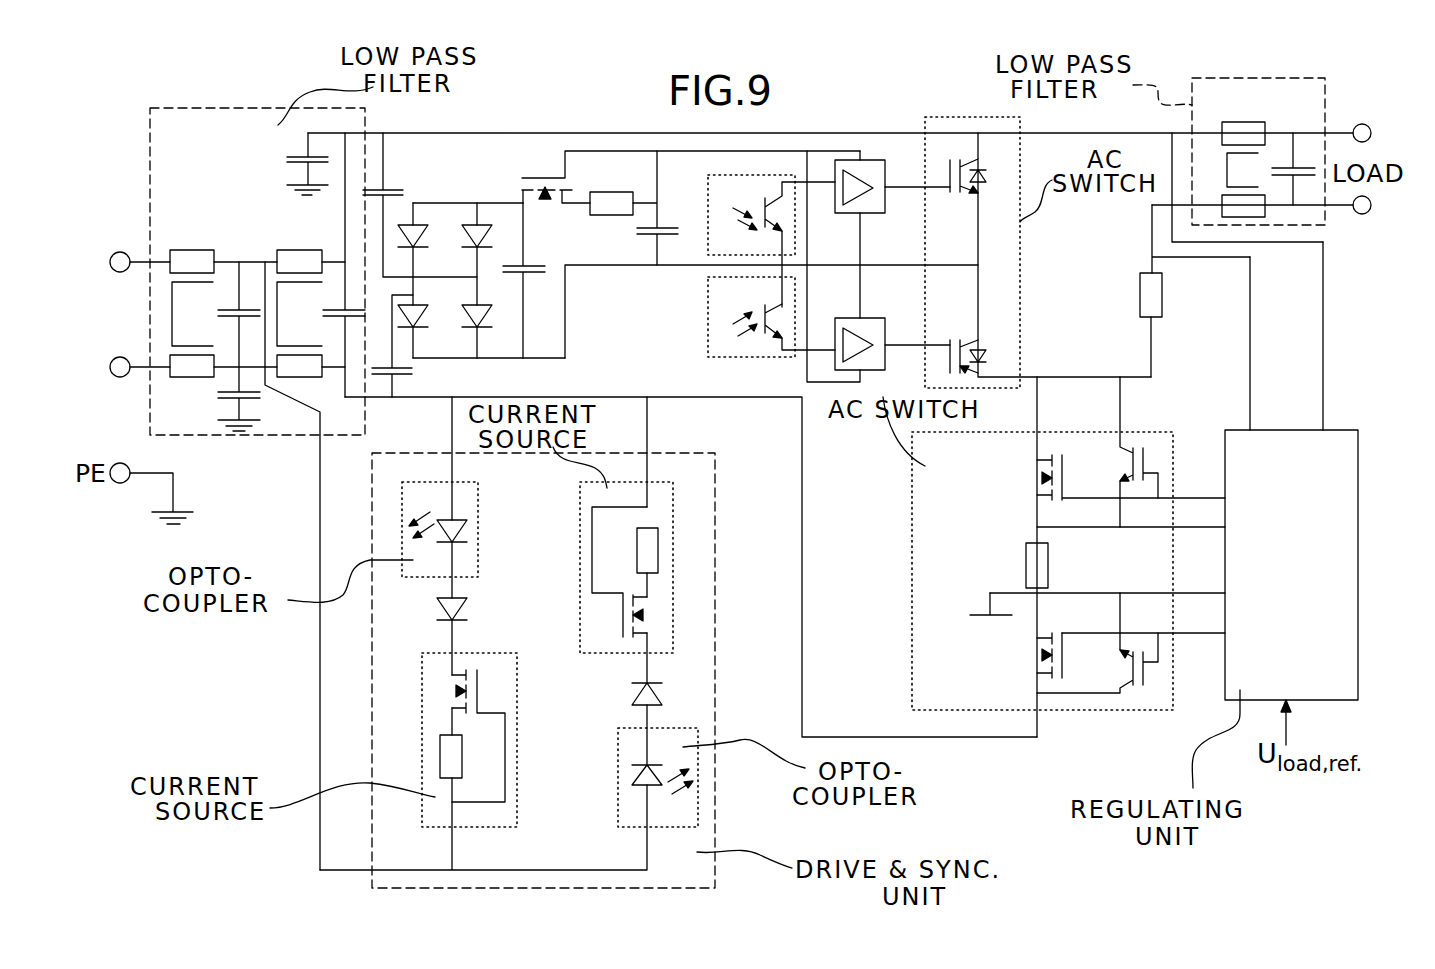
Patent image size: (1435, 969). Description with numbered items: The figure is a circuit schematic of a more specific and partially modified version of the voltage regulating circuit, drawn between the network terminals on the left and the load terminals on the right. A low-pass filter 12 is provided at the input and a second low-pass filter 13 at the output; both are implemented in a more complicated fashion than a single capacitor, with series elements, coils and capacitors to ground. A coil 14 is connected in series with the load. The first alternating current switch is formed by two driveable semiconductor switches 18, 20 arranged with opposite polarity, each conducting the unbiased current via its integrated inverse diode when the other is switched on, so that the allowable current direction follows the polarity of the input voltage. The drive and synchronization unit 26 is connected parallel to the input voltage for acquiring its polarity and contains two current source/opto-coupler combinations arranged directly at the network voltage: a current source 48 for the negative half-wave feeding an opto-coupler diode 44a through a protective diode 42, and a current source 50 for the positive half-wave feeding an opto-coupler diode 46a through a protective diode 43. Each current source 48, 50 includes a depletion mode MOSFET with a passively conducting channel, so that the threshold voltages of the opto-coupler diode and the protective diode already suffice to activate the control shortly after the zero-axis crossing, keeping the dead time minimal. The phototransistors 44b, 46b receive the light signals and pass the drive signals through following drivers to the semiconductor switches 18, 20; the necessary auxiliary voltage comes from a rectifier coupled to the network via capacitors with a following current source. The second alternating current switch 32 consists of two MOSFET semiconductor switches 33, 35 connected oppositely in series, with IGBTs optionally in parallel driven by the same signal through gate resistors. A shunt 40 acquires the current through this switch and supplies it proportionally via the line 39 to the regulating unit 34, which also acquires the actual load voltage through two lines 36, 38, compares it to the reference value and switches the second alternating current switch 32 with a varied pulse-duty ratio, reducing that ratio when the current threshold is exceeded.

The low-pass filter 12 is at (197, 123).
The low-pass filter 13 is at (1310, 102).
The coil 14 is at (1132, 325).
The semiconductor switch 18 is at (982, 176).
The semiconductor switch 20 is at (982, 356).
The drive and synchronization unit 26 is at (557, 642).
The second alternating current switch 32 is at (1034, 557).
The semiconductor switch 33 is at (1131, 452).
The regulating unit 34 is at (1291, 565).
The semiconductor switch 35 is at (1097, 643).
The line 36 is at (1345, 336).
The line 38 is at (1230, 343).
The line 39 is at (1107, 580).
The shunt 40 is at (1055, 565).
The protective diode 42 is at (470, 609).
The protective diode 43 is at (665, 693).
The opto-coupler 44a is at (440, 529).
The opto-coupler 44b is at (771, 241).
The opto-coupler 46a is at (658, 777).
The opto-coupler 46b is at (771, 317).
The current source 48 is at (507, 813).
The current source 50 is at (590, 495).